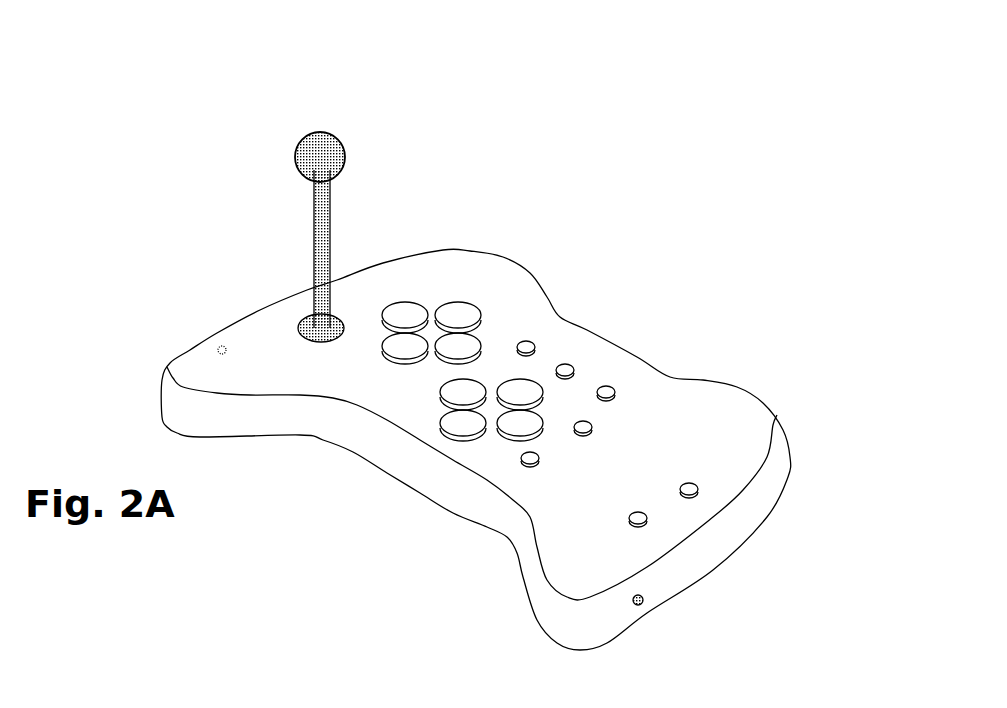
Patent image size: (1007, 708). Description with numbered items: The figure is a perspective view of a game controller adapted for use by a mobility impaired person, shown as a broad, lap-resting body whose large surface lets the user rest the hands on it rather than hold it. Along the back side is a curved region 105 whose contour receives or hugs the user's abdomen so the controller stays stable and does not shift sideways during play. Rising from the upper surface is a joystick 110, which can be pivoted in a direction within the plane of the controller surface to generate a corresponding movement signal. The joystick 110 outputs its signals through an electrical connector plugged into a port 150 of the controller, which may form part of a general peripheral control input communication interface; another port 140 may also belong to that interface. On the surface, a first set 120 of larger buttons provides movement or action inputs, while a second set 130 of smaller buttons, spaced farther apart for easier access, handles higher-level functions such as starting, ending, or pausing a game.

The curved region 105 is at (476, 449).
The joystick 110 is at (316, 138).
The first set of larger buttons 120 is at (530, 387).
The second set of smaller buttons 130 is at (683, 478).
The port 140 is at (627, 612).
The port 150 is at (217, 349).